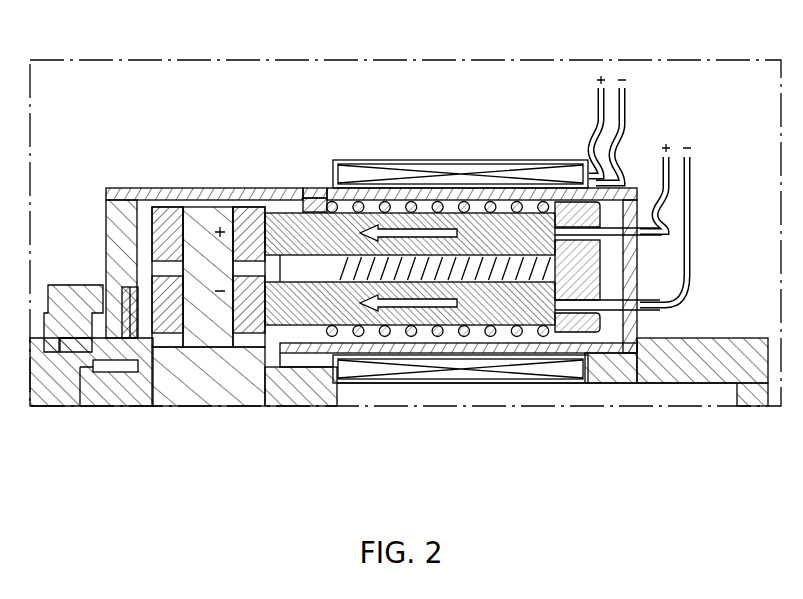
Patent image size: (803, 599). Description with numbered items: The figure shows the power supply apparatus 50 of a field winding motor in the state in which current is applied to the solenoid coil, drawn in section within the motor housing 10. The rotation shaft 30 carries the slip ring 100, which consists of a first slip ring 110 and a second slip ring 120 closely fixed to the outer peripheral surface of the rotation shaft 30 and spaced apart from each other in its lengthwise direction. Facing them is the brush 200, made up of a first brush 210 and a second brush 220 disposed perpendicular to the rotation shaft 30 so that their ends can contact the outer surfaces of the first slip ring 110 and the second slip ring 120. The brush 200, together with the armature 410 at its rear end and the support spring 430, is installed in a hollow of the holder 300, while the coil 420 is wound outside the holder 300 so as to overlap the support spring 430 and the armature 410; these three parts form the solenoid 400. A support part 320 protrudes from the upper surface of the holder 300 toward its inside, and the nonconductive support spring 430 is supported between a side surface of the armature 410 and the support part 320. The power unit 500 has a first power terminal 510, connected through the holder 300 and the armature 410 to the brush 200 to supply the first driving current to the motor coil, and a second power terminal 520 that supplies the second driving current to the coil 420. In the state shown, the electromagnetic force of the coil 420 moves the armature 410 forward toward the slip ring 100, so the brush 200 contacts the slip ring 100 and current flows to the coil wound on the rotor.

The power supply apparatus 50 is at (286, 29).
The motor housing 10 is at (700, 384).
The rotation shaft 30 is at (203, 395).
The slip ring 100 is at (46, 217).
The first slip ring 110 is at (163, 284).
The second slip ring 120 is at (163, 222).
The brush 200 is at (305, 126).
The first brush 210 is at (250, 205).
The second brush 220 is at (293, 208).
The holder 300 is at (637, 262).
The support part 320 is at (317, 197).
The solenoid 400 is at (533, 102).
The armature 410 is at (565, 192).
The coil 420 is at (473, 173).
The support spring 430 is at (437, 201).
The power unit 500 is at (750, 85).
The first power terminal 510 is at (690, 162).
The second power terminal 520 is at (632, 98).